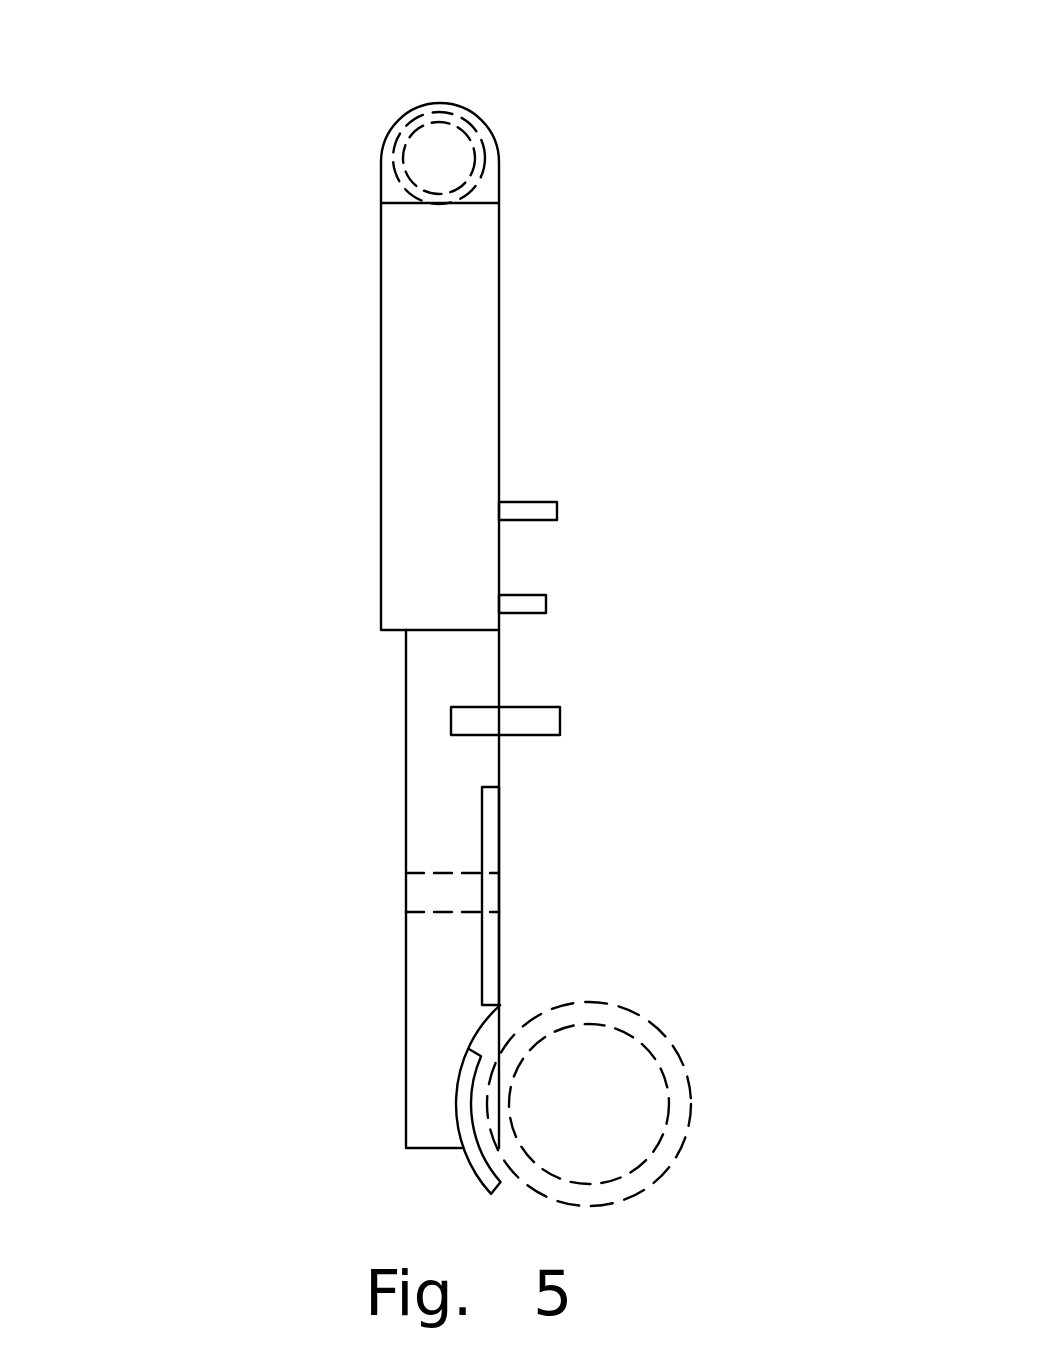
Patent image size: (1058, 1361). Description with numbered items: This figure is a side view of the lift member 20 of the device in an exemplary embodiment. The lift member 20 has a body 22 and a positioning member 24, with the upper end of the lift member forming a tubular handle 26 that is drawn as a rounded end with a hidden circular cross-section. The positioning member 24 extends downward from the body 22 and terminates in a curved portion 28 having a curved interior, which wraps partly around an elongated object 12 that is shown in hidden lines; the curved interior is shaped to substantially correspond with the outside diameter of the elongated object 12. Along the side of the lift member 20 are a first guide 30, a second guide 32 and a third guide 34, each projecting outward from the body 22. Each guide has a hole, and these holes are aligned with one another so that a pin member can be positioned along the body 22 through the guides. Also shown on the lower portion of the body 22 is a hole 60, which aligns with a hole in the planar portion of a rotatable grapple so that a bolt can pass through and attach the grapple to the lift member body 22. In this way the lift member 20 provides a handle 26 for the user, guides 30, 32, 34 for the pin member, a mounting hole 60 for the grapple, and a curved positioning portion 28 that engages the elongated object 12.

The elongated object 12 is at (591, 1003).
The lift member 20 is at (186, 313).
The body 22 is at (406, 685).
The positioning member 24 is at (406, 995).
The tubular handle 26 is at (529, 102).
The curved portion 28 is at (349, 1129).
The first guide 30 is at (631, 458).
The second guide 32 is at (631, 570).
The third guide 34 is at (607, 668).
The hole 60 is at (346, 884).